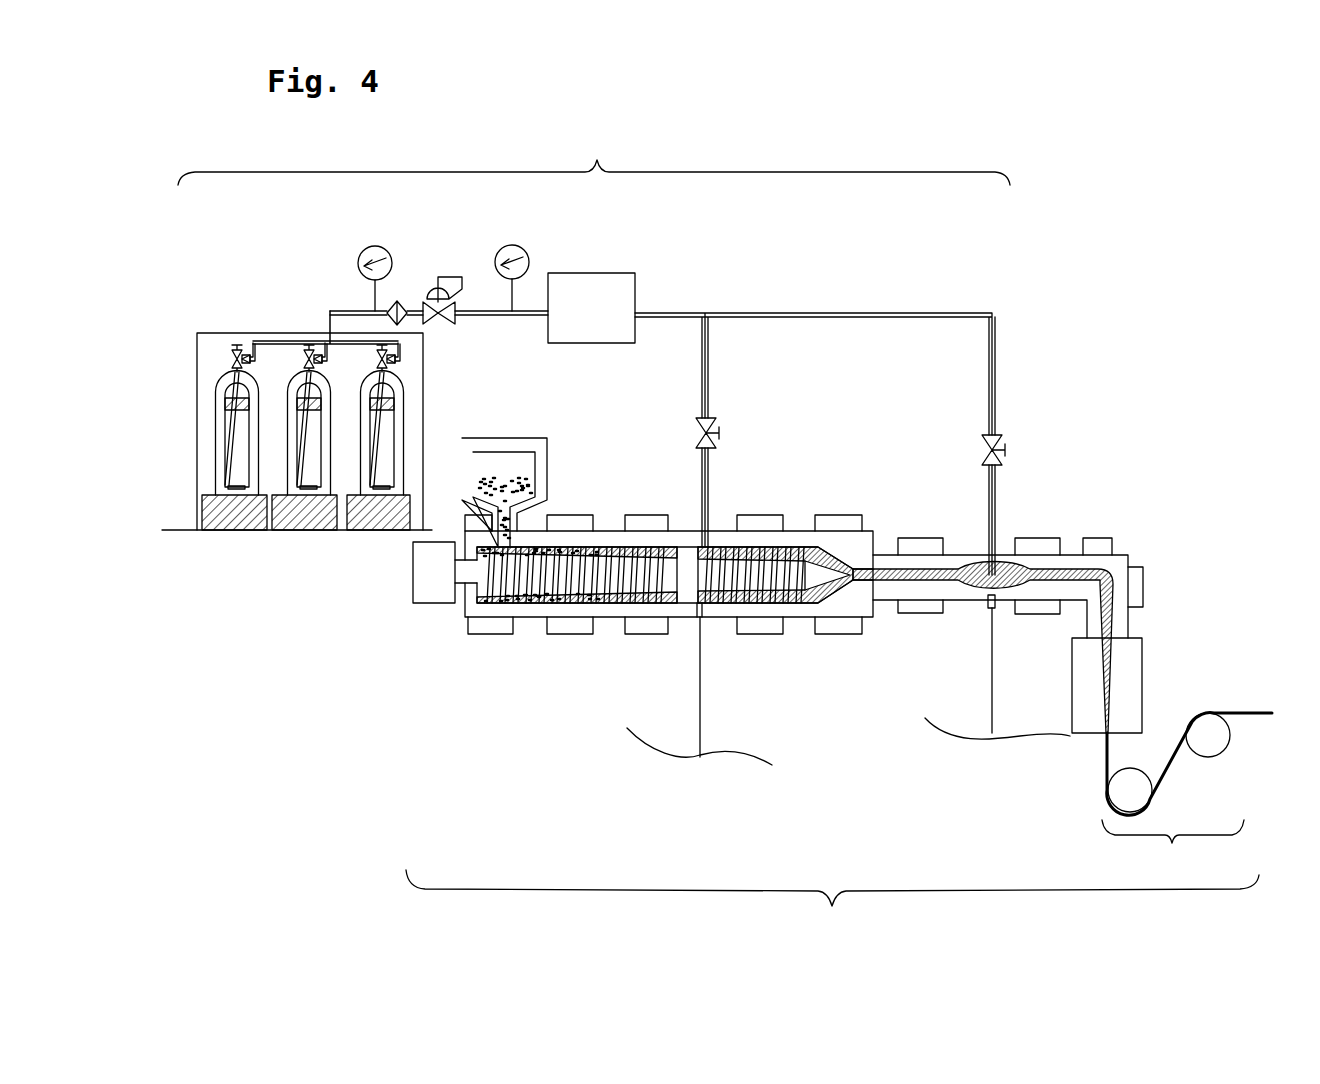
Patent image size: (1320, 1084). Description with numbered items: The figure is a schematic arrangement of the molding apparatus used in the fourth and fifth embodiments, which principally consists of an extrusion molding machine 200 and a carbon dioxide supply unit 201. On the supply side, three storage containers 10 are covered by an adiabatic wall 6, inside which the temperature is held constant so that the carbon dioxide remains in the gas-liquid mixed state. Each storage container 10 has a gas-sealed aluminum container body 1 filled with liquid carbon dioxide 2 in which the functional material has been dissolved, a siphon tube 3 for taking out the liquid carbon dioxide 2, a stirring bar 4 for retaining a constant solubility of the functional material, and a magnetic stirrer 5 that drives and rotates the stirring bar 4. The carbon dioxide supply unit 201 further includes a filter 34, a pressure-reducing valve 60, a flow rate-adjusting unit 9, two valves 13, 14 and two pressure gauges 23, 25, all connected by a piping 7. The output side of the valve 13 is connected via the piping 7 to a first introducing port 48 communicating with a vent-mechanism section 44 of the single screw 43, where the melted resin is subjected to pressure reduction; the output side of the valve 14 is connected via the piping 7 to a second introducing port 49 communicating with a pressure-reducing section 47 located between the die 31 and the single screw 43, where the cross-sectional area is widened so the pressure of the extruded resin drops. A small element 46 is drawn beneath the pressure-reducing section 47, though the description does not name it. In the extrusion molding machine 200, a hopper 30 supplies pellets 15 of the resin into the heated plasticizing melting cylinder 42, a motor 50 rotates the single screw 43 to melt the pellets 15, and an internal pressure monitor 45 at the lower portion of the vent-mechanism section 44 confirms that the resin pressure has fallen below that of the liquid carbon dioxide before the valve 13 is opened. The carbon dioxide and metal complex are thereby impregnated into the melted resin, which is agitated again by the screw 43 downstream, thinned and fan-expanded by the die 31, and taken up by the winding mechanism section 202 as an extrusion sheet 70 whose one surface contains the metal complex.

The container body 1 is at (213, 455).
The liquid carbon dioxide 2 is at (241, 470).
The siphon tube 3 is at (233, 430).
The stirring bar 4 is at (245, 488).
The magnetic stirrer 5 is at (210, 532).
The adiabatic wall 6 is at (210, 336).
The piping 7 is at (828, 313).
The flow rate-adjusting unit 9 is at (605, 280).
The storage container 10 is at (285, 431).
The valve 13 is at (714, 430).
The valve 14 is at (1000, 448).
The pellets 15 is at (530, 487).
The pressure gauge 23 is at (515, 246).
The pressure gauge 25 is at (368, 251).
The hopper 30 is at (539, 491).
The die 31 is at (1137, 657).
The filter 34 is at (398, 301).
The plasticizing melting cylinder 42 is at (608, 606).
The single screw 43 is at (795, 600).
The vent-mechanism section 44 is at (686, 560).
The internal pressure monitor 45 is at (697, 605).
The pressure sensor 46 is at (988, 606).
The pressure-reducing section 47 is at (1005, 567).
The first introducing port 48 is at (720, 542).
The second introducing port 49 is at (988, 565).
The motor 50 is at (415, 597).
The pressure-reducing valve 60 is at (450, 277).
The extrusion sheet 70 is at (1247, 713).
The extrusion molding machine 200 is at (832, 904).
The carbon dioxide supply unit 201 is at (594, 155).
The winding mechanism section 202 is at (1173, 847).